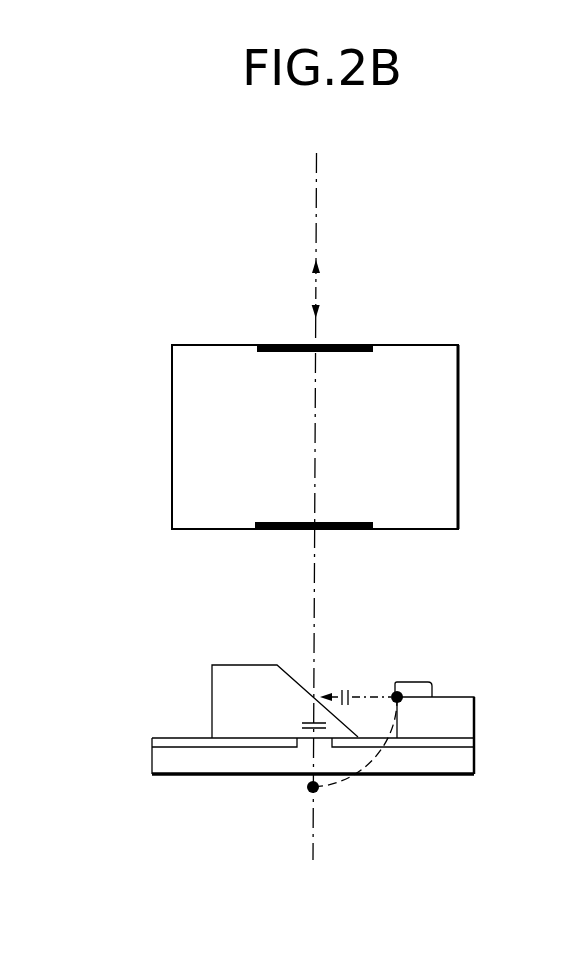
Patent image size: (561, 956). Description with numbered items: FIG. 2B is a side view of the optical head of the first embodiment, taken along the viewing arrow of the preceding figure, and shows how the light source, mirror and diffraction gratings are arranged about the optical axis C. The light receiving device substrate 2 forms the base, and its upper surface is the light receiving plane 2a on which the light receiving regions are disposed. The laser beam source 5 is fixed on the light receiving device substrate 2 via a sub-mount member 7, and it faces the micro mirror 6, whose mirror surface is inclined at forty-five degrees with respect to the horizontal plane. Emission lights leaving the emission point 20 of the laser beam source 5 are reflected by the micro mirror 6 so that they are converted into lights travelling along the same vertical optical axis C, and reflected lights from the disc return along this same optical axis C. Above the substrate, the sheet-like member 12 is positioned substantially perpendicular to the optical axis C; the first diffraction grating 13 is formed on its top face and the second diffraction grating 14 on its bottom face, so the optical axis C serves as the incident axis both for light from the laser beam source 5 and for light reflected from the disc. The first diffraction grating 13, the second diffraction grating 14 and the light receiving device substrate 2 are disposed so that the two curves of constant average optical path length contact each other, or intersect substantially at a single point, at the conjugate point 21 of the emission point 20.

The optical axis C is at (318, 170).
The sheet-like member 12 is at (449, 441).
The first diffraction grating 13 is at (362, 331).
The second diffraction grating 14 is at (357, 531).
The light receiving device substrate 2 is at (162, 762).
The light receiving plane 2a is at (190, 735).
The micro mirror 6 is at (268, 705).
The sub-mount member 7 is at (442, 725).
The laser beam source 5 is at (426, 682).
The emission point 20 is at (395, 691).
The conjugate point 21 is at (308, 790).